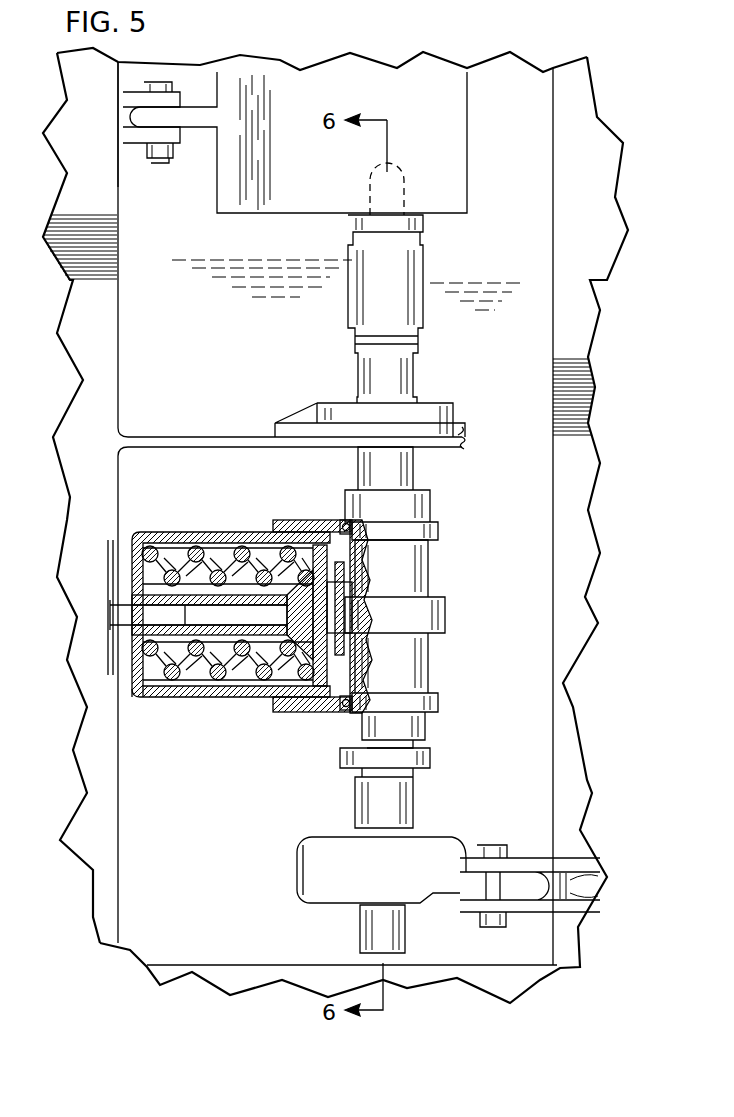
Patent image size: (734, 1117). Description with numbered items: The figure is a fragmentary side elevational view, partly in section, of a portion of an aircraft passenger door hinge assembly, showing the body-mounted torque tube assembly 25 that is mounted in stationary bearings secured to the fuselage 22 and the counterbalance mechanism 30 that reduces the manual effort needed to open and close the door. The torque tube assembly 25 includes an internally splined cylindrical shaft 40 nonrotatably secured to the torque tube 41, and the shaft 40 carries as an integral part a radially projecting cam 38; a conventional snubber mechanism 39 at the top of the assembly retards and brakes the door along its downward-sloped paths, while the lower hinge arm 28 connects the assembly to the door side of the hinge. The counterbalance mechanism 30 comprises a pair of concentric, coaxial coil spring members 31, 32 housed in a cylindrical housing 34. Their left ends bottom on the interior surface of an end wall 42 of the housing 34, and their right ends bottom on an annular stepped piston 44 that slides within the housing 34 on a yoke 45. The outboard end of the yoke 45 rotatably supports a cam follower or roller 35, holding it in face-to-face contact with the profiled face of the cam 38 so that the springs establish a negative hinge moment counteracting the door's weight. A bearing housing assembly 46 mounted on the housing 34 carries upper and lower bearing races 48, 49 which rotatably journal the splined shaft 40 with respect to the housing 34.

The fuselage 22 is at (597, 267).
The body-mounted torque tube assembly 25 is at (458, 282).
The lower hinge arm 28 is at (570, 903).
The counterbalance mechanism 30 is at (250, 515).
The coil spring member 31 is at (172, 535).
The coil spring member 32 is at (130, 638).
The cylindrical housing 34 is at (170, 695).
The cam follower or roller 35 is at (350, 617).
The cam 38 is at (433, 618).
The snubber mechanism 39 is at (458, 157).
The internally splined cylindrical sleeve or shaft 40 is at (408, 583).
The torque tube 41 is at (400, 387).
The end wall 42 is at (130, 547).
The annular stepped piston 44 is at (332, 553).
The yoke 45 is at (262, 662).
The bearing housing assembly 46 is at (305, 522).
The upper bearing race 48 is at (340, 520).
The lower bearing race 49 is at (343, 710).